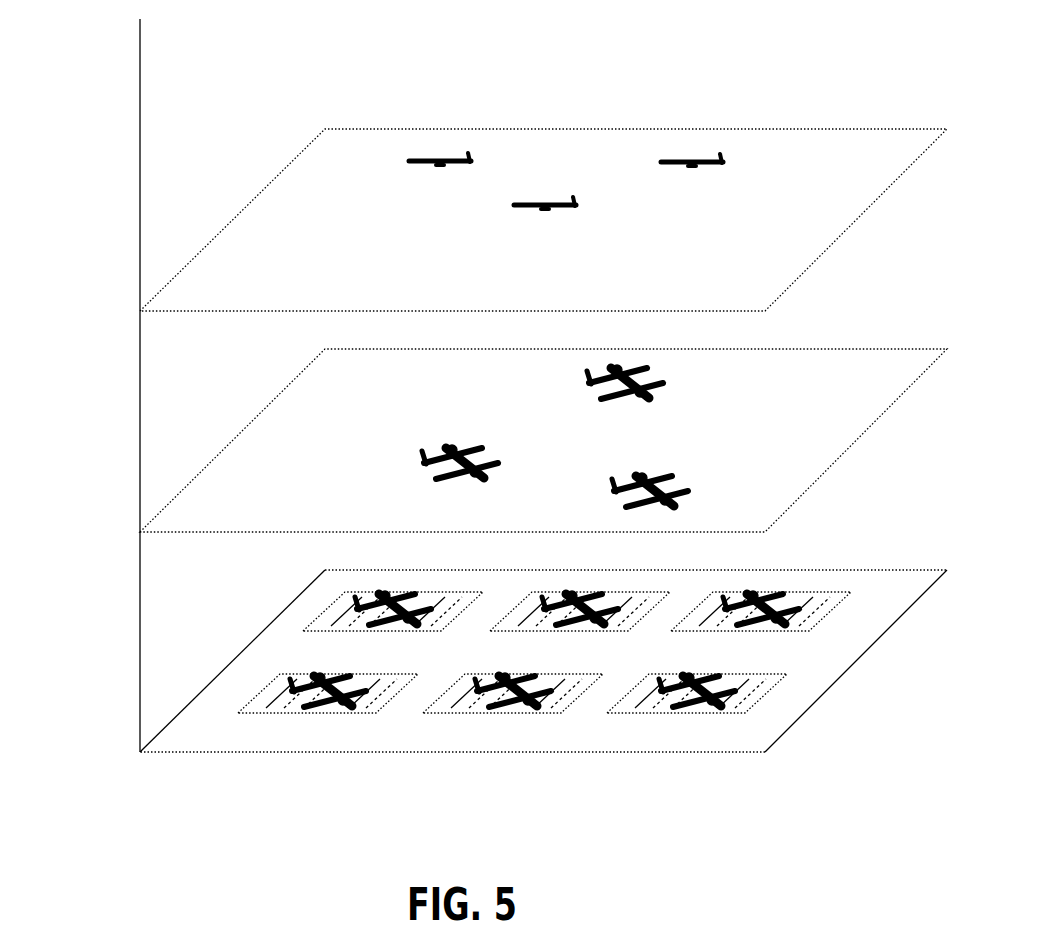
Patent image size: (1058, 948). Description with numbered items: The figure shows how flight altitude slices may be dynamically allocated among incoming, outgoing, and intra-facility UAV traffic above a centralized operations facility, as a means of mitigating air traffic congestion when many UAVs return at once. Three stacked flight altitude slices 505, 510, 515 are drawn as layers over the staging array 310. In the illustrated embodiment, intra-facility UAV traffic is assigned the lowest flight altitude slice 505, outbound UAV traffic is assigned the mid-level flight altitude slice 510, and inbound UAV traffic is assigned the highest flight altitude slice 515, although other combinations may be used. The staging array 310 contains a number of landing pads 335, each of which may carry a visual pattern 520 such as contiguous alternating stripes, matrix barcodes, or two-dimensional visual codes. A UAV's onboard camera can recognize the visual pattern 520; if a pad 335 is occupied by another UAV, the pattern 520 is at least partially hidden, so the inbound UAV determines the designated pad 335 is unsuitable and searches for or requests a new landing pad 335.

The lowest flight altitude slice 505 is at (123, 532).
The mid-level flight altitude slice 510 is at (123, 313).
The highest flight altitude slice 515 is at (123, 19).
The staging array 310 is at (657, 752).
The landing pad 335 is at (283, 712).
The visual pattern 520 is at (332, 606).